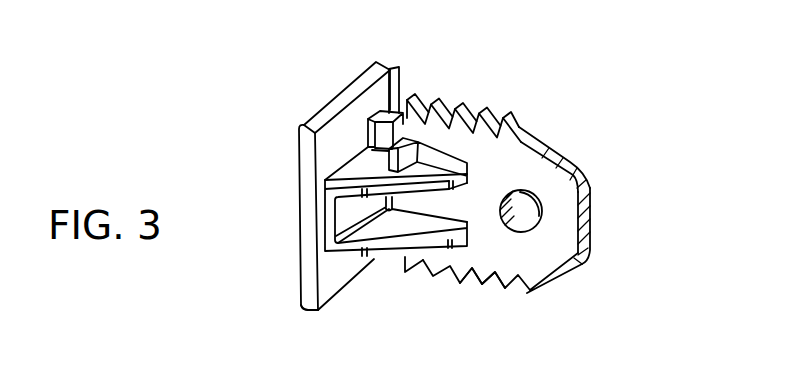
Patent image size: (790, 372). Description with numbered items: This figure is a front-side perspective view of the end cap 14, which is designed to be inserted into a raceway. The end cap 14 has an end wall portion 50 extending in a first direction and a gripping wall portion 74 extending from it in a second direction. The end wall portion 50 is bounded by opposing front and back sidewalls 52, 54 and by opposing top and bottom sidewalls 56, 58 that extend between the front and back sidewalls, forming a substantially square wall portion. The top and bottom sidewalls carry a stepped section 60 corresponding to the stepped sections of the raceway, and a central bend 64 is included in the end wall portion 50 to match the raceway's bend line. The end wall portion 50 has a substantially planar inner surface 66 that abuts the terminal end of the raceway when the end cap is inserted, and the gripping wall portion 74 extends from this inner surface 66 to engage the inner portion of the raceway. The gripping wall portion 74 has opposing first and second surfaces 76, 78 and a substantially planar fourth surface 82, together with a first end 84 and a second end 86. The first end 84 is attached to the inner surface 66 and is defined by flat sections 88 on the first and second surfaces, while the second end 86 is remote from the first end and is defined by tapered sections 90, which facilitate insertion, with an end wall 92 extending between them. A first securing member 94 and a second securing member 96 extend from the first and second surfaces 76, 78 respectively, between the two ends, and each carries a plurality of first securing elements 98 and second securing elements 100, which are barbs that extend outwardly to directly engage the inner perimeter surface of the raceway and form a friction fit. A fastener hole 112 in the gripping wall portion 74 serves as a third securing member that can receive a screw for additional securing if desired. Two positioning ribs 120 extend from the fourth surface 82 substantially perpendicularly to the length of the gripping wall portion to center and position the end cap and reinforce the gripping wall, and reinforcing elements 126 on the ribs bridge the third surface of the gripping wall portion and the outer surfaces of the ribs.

The end cap 14 is at (565, 85).
The end wall portion 50 is at (283, 116).
The front sidewall 52 is at (312, 266).
The back sidewall 54 is at (400, 111).
The top sidewall 56 is at (327, 112).
The bottom sidewall 58 is at (332, 313).
The stepped section 60 is at (393, 108).
The central bend 64 is at (304, 219).
The inner surface 66 is at (332, 280).
The gripping wall portion 74 is at (532, 309).
The first surface 76 is at (524, 126).
The second surface 78 is at (469, 277).
The fourth surface 82 is at (548, 279).
The first end 84 is at (368, 133).
The second end 86 is at (591, 180).
The flat section 88 is at (403, 113).
The tapered section 90 is at (563, 147).
The end wall 92 is at (584, 218).
The first securing member 94 is at (476, 90).
The second securing member 96 is at (480, 294).
The first securing elements 98 is at (518, 126).
The second securing elements 100 is at (458, 282).
The fastener hole 112 is at (541, 210).
The positioning rib 120 is at (372, 258).
The reinforcing element 126 is at (455, 158).